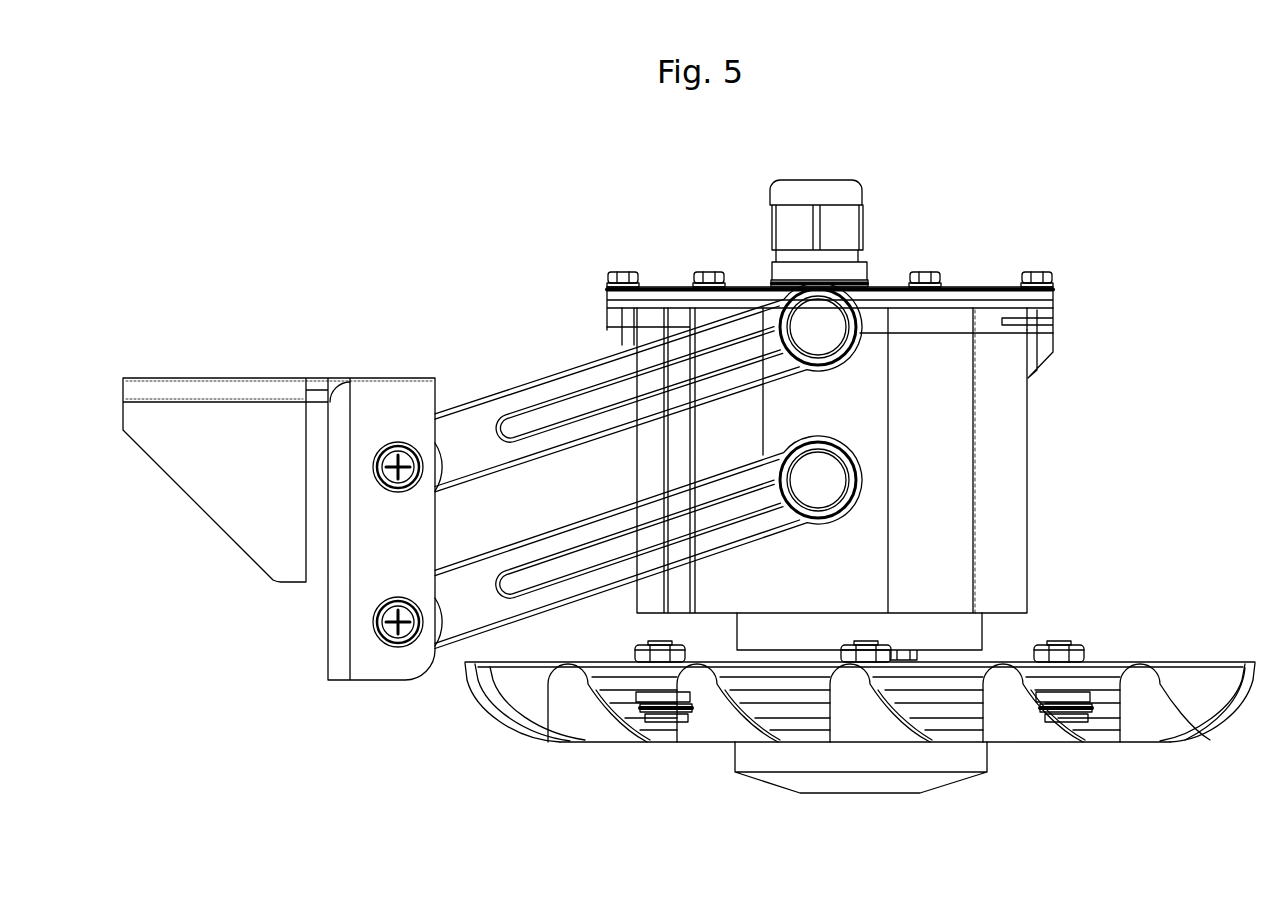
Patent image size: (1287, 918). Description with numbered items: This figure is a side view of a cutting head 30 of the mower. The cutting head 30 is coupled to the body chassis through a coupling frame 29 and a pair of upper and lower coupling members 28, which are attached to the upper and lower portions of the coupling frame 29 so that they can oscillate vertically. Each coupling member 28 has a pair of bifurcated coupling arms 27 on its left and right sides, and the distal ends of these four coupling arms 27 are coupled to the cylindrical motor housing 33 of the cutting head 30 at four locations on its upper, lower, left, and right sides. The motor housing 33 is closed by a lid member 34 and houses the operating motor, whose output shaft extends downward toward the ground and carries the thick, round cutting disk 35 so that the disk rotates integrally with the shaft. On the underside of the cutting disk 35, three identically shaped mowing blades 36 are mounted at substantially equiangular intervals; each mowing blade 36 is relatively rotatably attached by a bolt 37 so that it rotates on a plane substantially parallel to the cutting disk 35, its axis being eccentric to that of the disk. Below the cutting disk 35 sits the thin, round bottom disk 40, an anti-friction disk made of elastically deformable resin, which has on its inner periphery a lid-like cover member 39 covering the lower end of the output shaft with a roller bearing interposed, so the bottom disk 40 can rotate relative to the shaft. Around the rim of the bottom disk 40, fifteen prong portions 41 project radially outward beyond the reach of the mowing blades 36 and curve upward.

The coupling arm 27 is at (600, 357).
The coupling member 28 is at (453, 403).
The coupling frame 29 is at (380, 682).
The cutting head 30 is at (1197, 427).
The motor housing 33 is at (1027, 462).
The lid member 34 is at (958, 288).
The cutting disk 35 is at (1193, 662).
The mowing blade 36 is at (637, 727).
The bolt 37 is at (640, 690).
The cover member 39 is at (760, 785).
The bottom disk 40 is at (1000, 743).
The prong portion 41 is at (1243, 697).